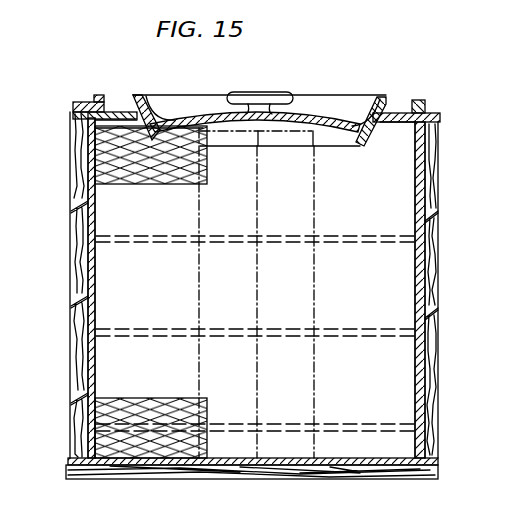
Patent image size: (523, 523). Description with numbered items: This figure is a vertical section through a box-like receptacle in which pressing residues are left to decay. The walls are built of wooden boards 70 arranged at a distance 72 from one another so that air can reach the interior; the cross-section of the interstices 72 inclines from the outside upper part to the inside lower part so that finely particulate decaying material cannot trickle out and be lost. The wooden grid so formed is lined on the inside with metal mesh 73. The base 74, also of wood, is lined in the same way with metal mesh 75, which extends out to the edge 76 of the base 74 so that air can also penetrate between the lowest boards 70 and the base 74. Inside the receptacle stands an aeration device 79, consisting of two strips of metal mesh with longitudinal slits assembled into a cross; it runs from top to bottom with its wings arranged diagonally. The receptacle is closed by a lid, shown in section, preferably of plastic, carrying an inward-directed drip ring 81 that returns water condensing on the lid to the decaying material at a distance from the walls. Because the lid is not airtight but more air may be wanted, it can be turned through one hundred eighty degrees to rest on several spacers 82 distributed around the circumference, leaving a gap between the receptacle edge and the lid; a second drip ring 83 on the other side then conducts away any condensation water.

The wooden boards 70 is at (430, 218).
The distance (interstices) 72 is at (432, 314).
The metal mesh 73 is at (120, 268).
The base 74 is at (120, 470).
The metal mesh 75 is at (348, 470).
The edge of the base 76 is at (68, 461).
The aeration device 79 is at (319, 308).
The drip ring 81 is at (357, 150).
The spacers 82 is at (88, 103).
The drip ring 83 is at (383, 100).